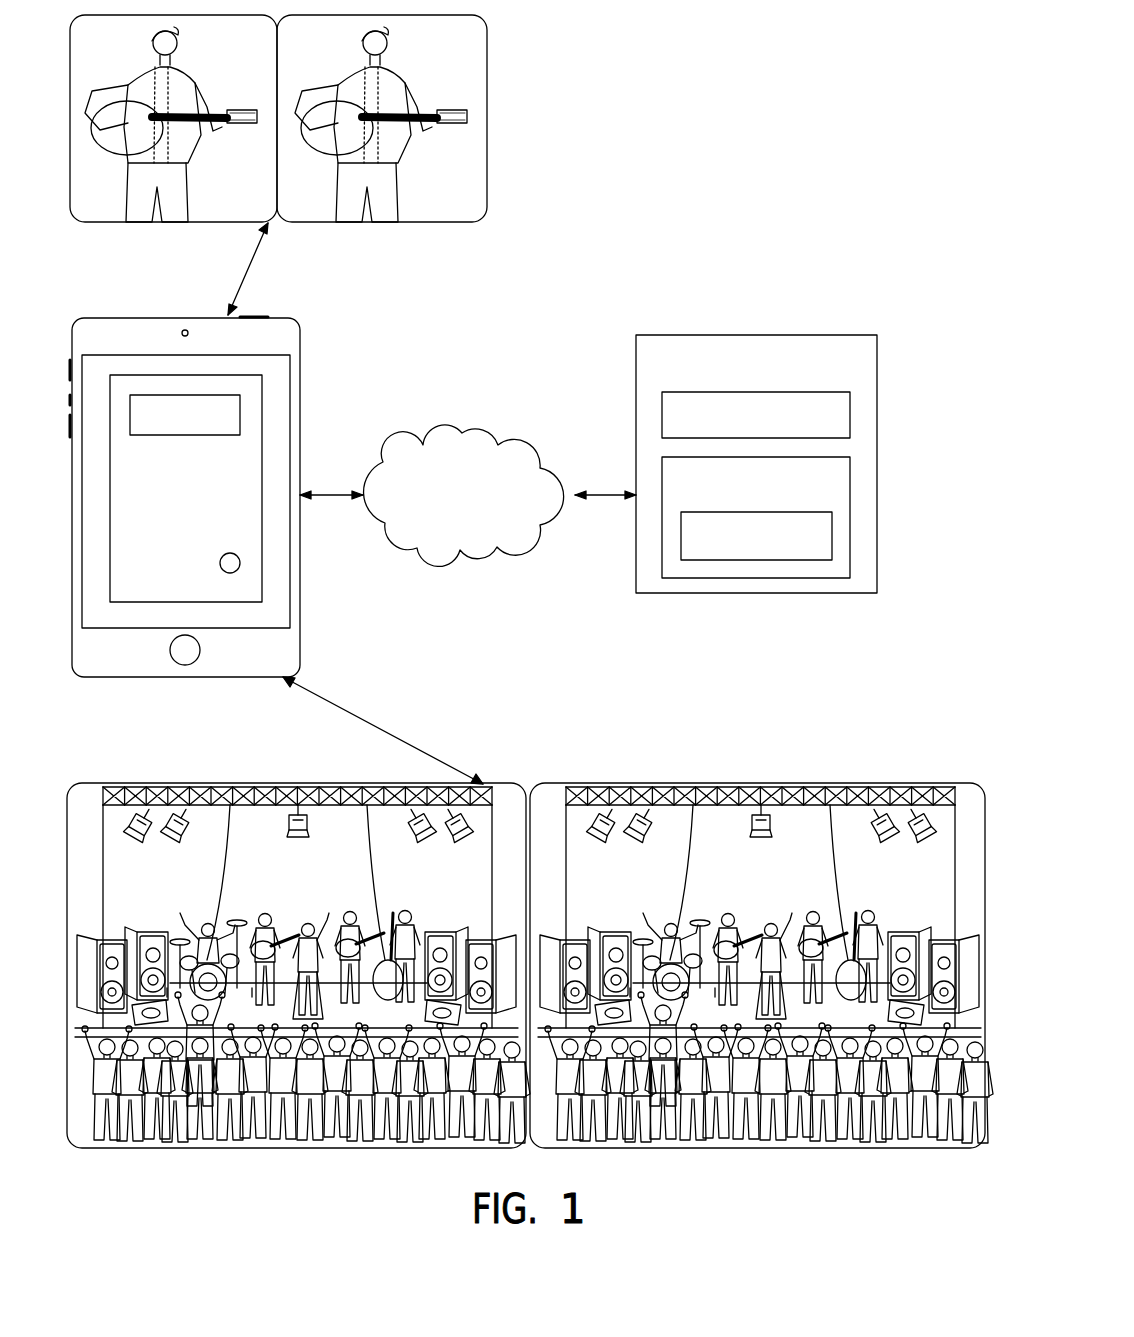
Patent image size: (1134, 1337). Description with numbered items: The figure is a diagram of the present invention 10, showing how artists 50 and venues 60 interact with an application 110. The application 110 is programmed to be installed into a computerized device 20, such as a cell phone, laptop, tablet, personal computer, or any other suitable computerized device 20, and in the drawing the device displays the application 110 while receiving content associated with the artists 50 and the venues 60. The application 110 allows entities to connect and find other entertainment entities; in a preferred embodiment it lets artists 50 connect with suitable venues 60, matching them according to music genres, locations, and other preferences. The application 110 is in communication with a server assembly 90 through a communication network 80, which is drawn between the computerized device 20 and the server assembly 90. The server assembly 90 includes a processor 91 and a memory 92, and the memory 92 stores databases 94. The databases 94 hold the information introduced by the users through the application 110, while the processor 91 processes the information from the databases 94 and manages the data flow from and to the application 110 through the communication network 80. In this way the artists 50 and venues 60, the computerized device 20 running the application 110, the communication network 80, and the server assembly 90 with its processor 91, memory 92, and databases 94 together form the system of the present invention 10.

The present invention 10 is at (763, 47).
The computerized device 20 is at (232, 495).
The artists 50 is at (494, 61).
The venues 60 is at (557, 777).
The communication network 80 is at (475, 430).
The server assembly 90 is at (794, 464).
The processor 91 is at (850, 410).
The memory 92 is at (795, 522).
The databases 94 is at (832, 552).
The application 110 is at (262, 418).